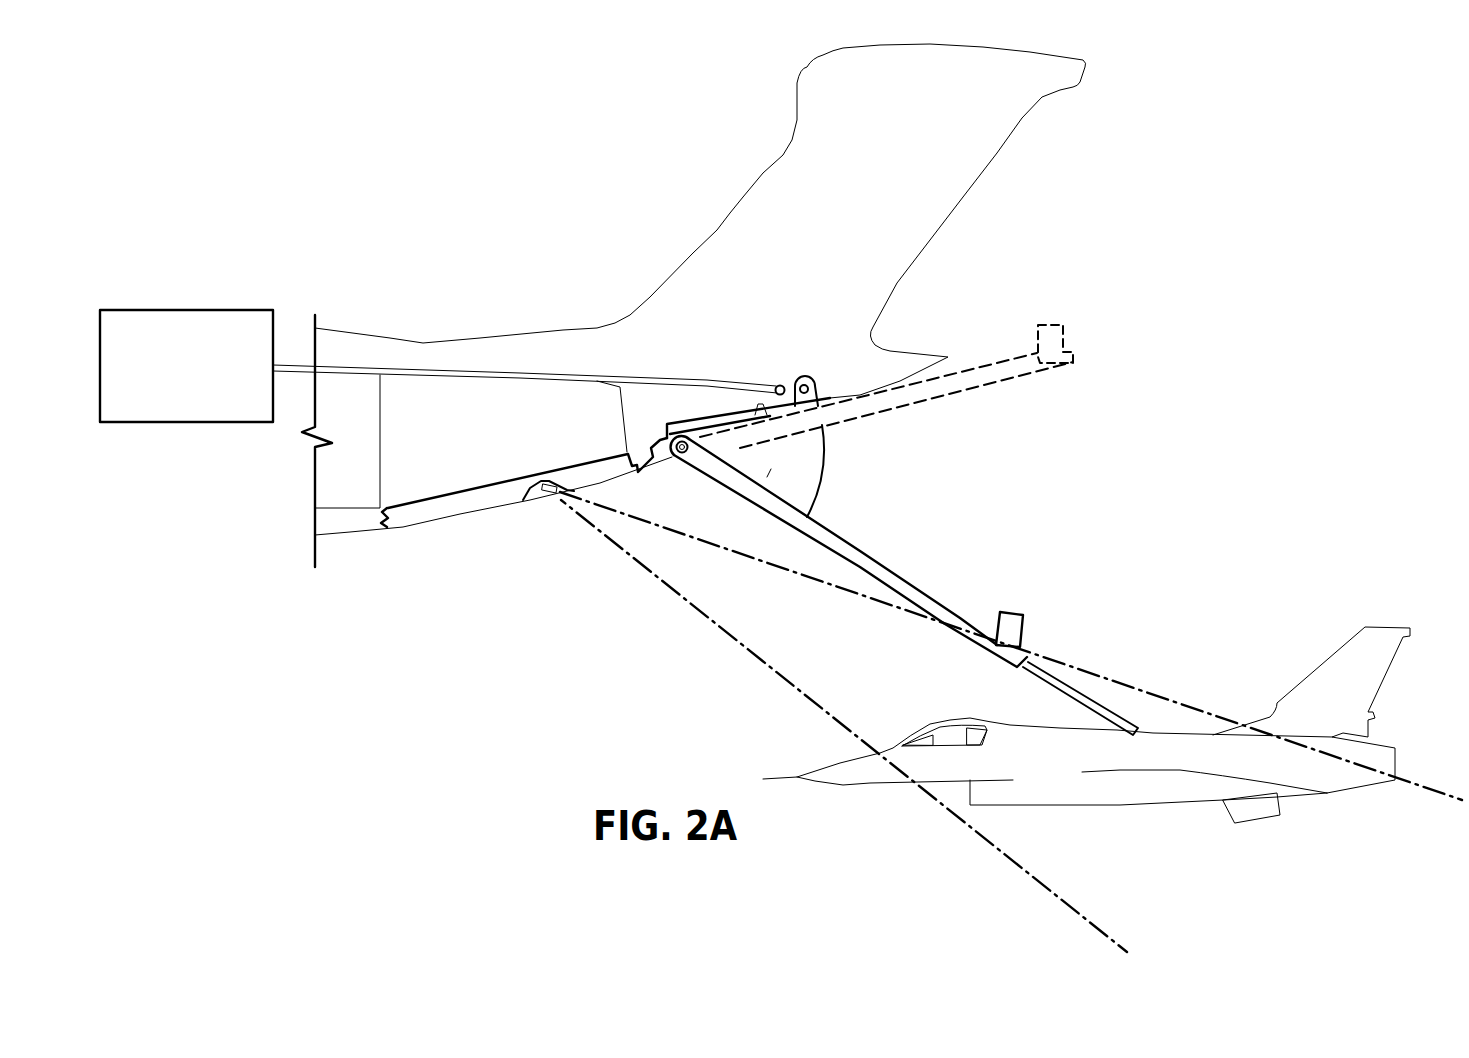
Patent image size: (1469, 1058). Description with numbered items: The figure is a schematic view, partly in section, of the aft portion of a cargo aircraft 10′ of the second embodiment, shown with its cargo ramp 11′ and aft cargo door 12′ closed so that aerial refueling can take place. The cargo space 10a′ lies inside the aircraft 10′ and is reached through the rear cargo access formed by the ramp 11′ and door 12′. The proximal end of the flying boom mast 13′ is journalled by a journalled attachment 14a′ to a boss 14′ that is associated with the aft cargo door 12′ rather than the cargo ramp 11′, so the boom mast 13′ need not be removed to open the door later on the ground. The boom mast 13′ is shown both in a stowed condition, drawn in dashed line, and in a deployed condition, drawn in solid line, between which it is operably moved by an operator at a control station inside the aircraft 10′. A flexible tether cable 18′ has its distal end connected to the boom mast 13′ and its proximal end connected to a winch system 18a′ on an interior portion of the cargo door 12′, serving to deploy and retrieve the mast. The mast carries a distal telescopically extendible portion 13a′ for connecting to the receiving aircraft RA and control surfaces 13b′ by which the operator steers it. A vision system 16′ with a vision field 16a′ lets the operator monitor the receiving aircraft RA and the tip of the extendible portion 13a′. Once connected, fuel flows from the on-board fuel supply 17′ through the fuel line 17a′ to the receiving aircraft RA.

The cargo aircraft 10′ is at (393, 285).
The cargo space 10a′ is at (508, 443).
The cargo ramp 11′ is at (422, 514).
The cargo door 12′ is at (655, 458).
The boom mast 13′ is at (996, 392).
The telescopically extendible portion 13a′ is at (1097, 702).
The control surfaces 13b′ is at (1060, 325).
The boss 14′ is at (676, 440).
The journalled attachment 14a′ is at (686, 438).
The vision system 16′ is at (535, 500).
The vision field 16a′ is at (672, 587).
The on-board fuel supply 17′ is at (204, 308).
The fuel line 17a′ is at (548, 390).
The flexible tether cable 18′ is at (845, 480).
The winch system 18a′ is at (810, 384).
The receiving aircraft RA is at (1070, 792).